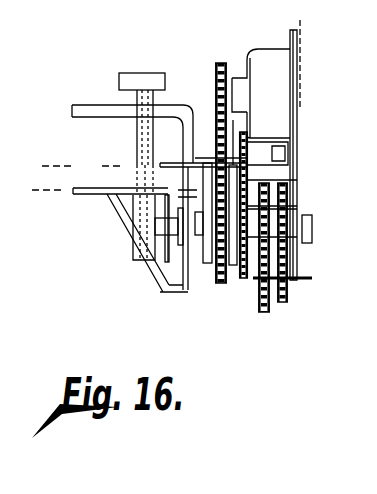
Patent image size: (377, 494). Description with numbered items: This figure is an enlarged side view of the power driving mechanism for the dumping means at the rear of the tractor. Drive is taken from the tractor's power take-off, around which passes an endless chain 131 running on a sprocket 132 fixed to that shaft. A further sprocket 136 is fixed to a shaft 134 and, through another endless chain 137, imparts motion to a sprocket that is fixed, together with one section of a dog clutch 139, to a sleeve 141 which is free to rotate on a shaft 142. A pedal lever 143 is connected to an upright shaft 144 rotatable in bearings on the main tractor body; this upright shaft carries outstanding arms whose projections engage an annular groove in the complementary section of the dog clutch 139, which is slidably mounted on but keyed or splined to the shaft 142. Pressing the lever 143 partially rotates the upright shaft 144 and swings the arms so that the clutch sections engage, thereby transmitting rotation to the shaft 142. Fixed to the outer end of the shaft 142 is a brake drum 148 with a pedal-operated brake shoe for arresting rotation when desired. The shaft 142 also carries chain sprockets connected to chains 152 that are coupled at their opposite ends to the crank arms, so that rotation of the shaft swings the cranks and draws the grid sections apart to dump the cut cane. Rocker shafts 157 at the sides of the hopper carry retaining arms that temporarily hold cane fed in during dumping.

The endless chain 131 is at (227, 121).
The sprocket 132 is at (216, 66).
The shaft 134 is at (277, 153).
The sprocket 136 is at (267, 167).
The endless chain 137 is at (297, 210).
The dog clutch 139 is at (209, 272).
The sleeve 141 is at (233, 242).
The shaft 142 is at (302, 250).
The pedal lever 143 is at (85, 107).
The upright shaft 144 is at (185, 141).
The brake drum 148 is at (140, 262).
The chains 152 is at (284, 298).
The rocker shafts 157 is at (296, 278).